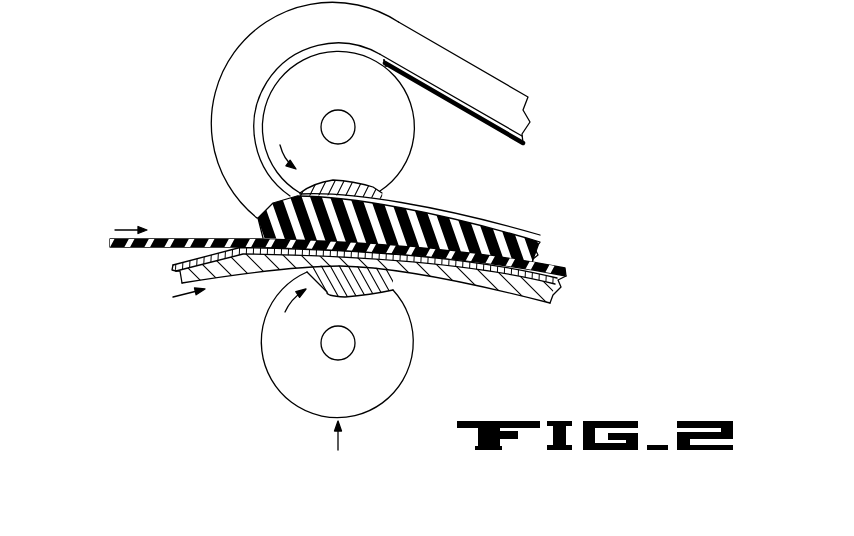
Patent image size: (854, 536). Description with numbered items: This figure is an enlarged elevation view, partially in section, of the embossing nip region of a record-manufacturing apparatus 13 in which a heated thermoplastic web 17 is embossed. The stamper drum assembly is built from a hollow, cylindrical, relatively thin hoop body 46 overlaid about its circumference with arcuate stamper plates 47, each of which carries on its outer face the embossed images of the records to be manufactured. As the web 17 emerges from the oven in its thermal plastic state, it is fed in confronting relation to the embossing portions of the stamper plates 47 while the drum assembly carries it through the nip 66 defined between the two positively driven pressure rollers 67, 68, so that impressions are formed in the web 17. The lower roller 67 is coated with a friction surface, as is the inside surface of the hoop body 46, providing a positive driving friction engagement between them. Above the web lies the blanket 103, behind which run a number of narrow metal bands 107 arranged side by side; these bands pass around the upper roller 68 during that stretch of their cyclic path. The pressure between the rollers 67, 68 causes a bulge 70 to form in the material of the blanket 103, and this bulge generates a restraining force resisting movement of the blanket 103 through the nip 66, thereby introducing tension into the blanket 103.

The fusing station 13 is at (302, 225).
The web 17 is at (112, 243).
The hoop body 46 is at (228, 273).
The stamper plates 47 is at (173, 267).
The nip 66 is at (200, 226).
The pressure roller 67 is at (352, 398).
The pressure roller 68 is at (313, 91).
The bulge 70 is at (258, 218).
The blanket 103 is at (470, 80).
The metal bands 107 is at (473, 115).